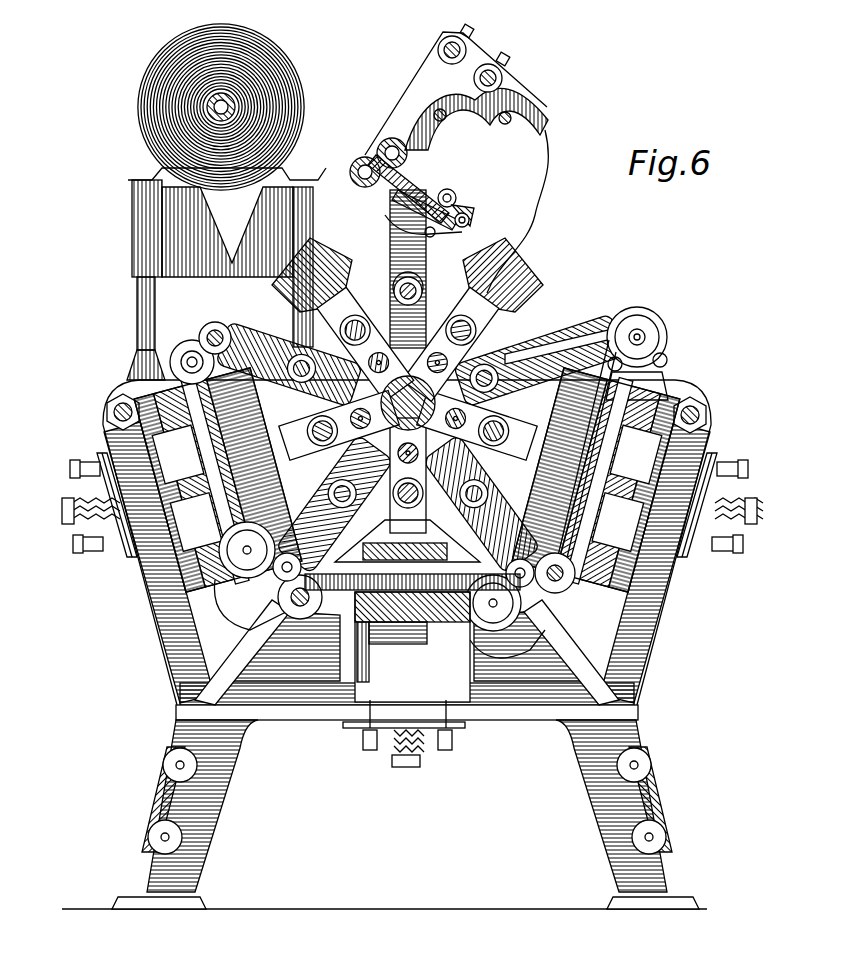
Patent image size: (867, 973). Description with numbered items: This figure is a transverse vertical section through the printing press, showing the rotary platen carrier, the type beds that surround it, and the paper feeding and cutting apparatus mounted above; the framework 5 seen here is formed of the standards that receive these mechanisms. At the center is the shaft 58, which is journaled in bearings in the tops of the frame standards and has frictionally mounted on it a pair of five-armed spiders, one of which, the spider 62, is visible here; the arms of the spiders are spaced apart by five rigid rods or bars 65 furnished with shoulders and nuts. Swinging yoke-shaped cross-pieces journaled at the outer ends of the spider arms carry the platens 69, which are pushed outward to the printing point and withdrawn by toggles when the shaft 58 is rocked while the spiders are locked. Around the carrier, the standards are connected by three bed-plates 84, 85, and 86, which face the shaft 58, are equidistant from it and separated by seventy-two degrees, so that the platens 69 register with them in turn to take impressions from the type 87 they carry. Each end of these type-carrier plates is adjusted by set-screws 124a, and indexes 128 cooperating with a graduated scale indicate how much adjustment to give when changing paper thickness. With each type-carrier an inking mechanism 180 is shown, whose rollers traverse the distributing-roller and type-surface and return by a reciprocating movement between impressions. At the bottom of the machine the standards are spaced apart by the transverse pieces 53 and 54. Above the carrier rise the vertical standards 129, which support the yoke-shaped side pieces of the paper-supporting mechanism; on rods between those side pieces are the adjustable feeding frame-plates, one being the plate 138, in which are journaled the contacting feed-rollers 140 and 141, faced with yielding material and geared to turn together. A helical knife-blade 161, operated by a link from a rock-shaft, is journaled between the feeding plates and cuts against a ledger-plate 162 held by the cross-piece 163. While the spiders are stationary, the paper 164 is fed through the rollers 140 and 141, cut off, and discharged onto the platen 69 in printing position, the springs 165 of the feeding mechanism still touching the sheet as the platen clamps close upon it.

The frame standard 5 is at (216, 806).
The transverse piece 53 is at (150, 805).
The transverse piece 54 is at (663, 823).
The shaft 58 is at (408, 410).
The spider 62 is at (562, 313).
The rods or bars 65 is at (488, 370).
The platen 69 is at (284, 278).
The bed-plate 84 is at (157, 530).
The bed-plate 85 is at (398, 620).
The bed-plate 86 is at (630, 567).
The type 87 is at (267, 510).
The set-screws 124a is at (717, 543).
The indexes 128 is at (717, 458).
The vertical standards 129 is at (280, 316).
The feeding frame-plate 138 is at (456, 89).
The feed-roller 140 is at (352, 165).
The feed-roller 141 is at (386, 146).
The helical knife-blade 161 is at (452, 214).
The ledger-plate 162 is at (432, 237).
The cross-piece 163 is at (392, 187).
The paper 164 is at (393, 223).
The springs 165 is at (518, 235).
The inking mechanism 180 is at (655, 350).